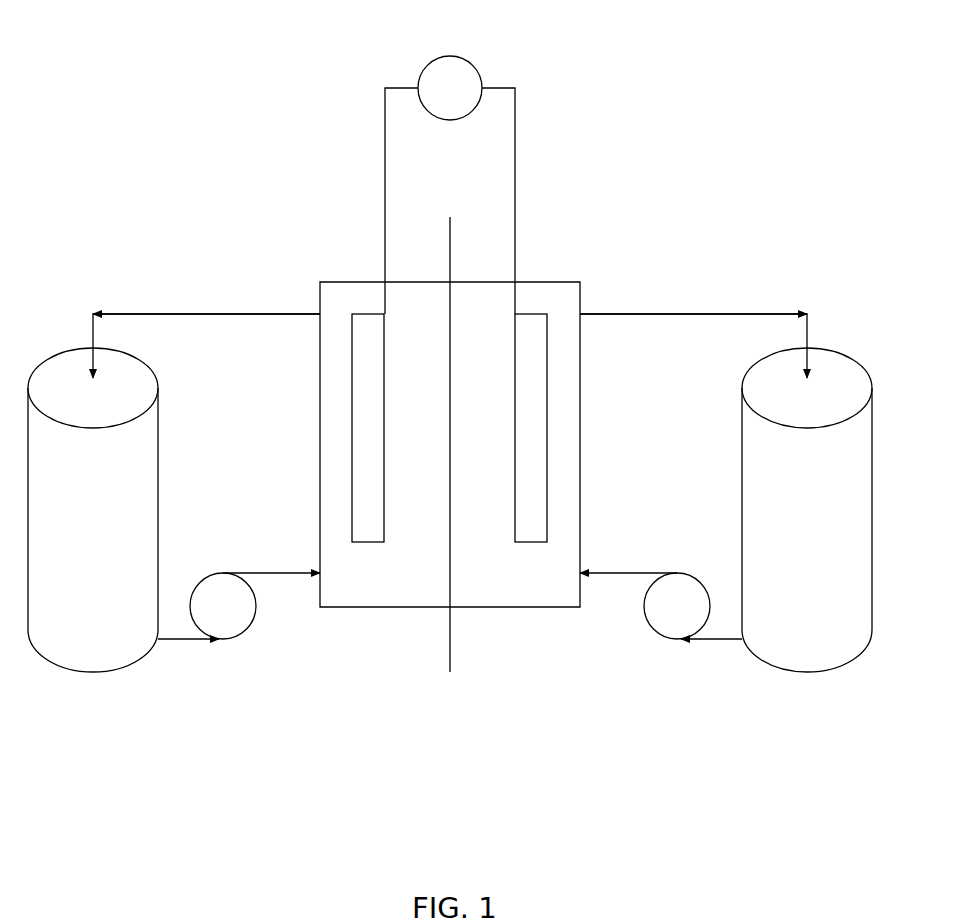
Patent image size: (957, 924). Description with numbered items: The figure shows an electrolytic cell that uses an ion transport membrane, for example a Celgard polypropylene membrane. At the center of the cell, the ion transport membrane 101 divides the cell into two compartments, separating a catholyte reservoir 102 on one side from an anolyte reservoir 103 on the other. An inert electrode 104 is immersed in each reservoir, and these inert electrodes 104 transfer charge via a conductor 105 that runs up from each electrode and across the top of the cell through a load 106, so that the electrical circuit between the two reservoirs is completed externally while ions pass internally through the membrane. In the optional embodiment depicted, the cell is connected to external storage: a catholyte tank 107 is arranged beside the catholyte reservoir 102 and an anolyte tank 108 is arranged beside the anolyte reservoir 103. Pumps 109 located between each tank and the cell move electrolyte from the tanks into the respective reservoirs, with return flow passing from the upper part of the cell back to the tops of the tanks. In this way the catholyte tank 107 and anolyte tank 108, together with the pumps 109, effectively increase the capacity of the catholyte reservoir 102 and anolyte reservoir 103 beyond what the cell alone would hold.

The ion transport membrane 101 is at (451, 648).
The catholyte reservoir 102 is at (320, 443).
The anolyte reservoir 103 is at (580, 437).
The inert electrodes 104 is at (366, 313).
The conductor 105 is at (385, 192).
The load 106 is at (462, 55).
The catholyte tank 107 is at (62, 668).
The anolyte tank 108 is at (810, 672).
The pumps 109 is at (252, 618).